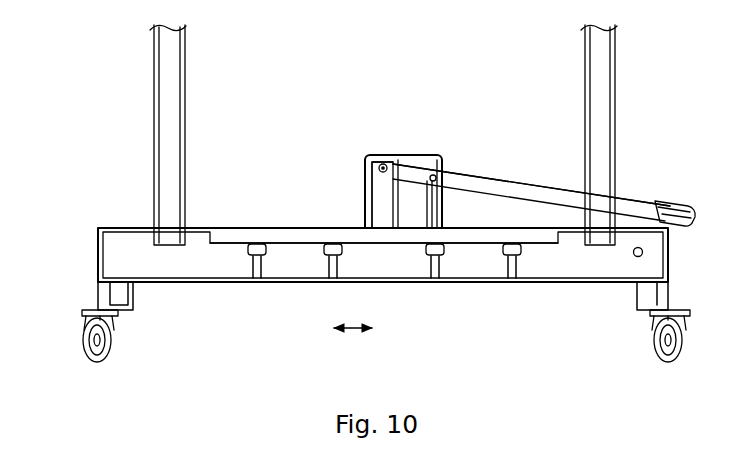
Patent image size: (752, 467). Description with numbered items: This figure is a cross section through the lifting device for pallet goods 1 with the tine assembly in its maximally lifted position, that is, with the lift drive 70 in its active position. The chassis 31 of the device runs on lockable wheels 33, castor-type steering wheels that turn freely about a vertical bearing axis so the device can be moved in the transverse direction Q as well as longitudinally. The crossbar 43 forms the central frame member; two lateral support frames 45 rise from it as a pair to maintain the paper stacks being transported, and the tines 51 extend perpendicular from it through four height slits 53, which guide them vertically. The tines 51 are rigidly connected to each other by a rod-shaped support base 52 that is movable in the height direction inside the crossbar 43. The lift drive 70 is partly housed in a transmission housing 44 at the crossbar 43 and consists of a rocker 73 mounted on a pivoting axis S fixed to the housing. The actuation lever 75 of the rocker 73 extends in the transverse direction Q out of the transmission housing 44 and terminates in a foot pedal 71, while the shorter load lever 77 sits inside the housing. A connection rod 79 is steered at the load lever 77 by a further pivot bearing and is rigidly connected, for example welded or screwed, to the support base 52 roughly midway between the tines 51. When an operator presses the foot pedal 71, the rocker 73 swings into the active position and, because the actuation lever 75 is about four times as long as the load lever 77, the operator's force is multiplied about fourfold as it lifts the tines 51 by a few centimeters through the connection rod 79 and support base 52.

The lifting device for pallet goods 1 is at (113, 93).
The chassis 31 is at (336, 216).
The lockable wheels 33 is at (112, 350).
The crossbar 43 is at (120, 253).
The transmission housing 44 is at (442, 152).
The lateral support frames 45 is at (176, 66).
The tines 51 is at (256, 256).
The support base 52 is at (280, 226).
The height slits 53 is at (256, 281).
The lift drive 70 is at (516, 118).
The foot pedal 71 is at (680, 203).
The rocker 73 is at (531, 155).
The actuation lever 75 is at (540, 184).
The load lever 77 is at (395, 157).
The connection rod 79 is at (368, 195).
The pivoting axis S is at (428, 174).
The transverse direction Q is at (345, 331).